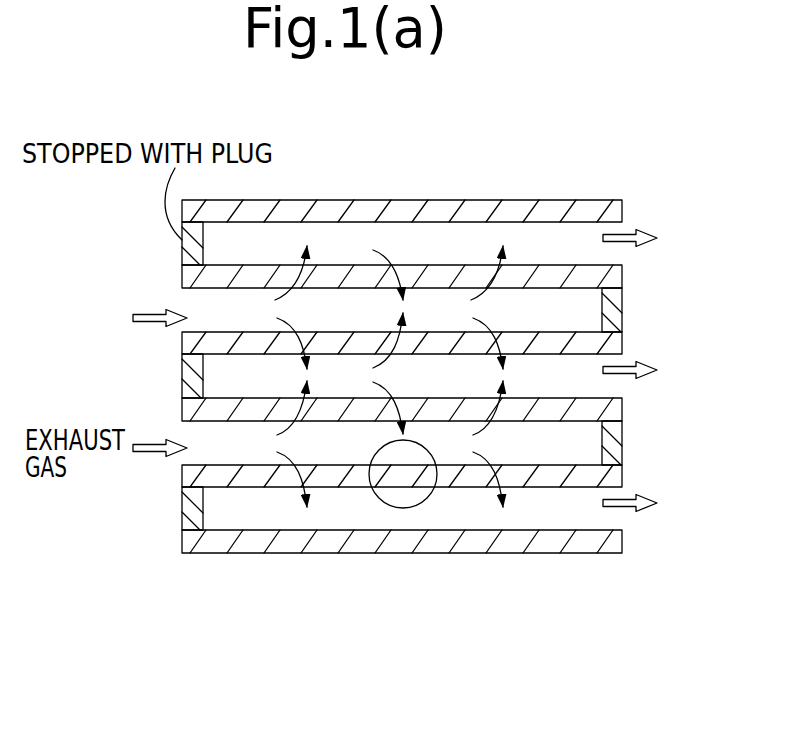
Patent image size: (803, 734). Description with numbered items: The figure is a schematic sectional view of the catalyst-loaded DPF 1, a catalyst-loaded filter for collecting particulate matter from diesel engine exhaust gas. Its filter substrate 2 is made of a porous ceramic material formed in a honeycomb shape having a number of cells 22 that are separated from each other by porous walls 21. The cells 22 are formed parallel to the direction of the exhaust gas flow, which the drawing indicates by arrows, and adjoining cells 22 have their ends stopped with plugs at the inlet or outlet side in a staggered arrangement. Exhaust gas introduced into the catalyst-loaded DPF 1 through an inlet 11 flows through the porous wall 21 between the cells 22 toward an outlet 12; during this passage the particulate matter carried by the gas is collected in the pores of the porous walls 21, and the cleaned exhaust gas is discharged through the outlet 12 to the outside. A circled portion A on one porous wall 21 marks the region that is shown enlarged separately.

The catalyst-loaded DPF 1 is at (124, 240).
The filter substrate 2 is at (465, 613).
The inlet 11 is at (183, 302).
The outlet 12 is at (610, 360).
The porous wall 21 is at (560, 477).
The cell 22 is at (510, 510).
The portion A is at (377, 497).